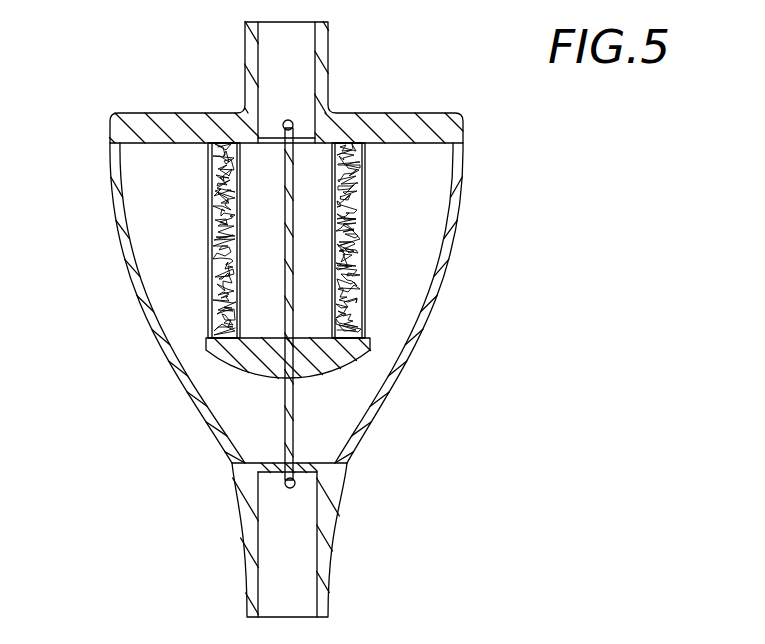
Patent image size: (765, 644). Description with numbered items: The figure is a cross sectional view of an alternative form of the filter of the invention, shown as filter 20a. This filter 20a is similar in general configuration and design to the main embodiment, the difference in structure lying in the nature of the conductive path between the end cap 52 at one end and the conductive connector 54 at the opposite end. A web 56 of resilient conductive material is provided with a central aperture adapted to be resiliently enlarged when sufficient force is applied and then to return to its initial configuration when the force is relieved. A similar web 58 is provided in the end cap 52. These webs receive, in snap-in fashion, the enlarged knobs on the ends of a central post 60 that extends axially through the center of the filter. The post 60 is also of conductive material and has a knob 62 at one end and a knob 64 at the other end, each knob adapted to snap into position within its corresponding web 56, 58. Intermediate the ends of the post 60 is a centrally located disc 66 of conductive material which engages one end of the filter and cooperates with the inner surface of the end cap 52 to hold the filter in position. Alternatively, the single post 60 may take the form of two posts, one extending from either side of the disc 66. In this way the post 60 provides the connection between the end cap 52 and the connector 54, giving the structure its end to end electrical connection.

The filter 20a is at (503, 345).
The end cap 52 is at (370, 127).
The conductive connector 54 is at (323, 564).
The web 56 is at (338, 472).
The web 58 is at (298, 145).
The central post 60 is at (285, 246).
The knob 62 is at (284, 483).
The knob 64 is at (282, 120).
The disc 66 is at (233, 360).